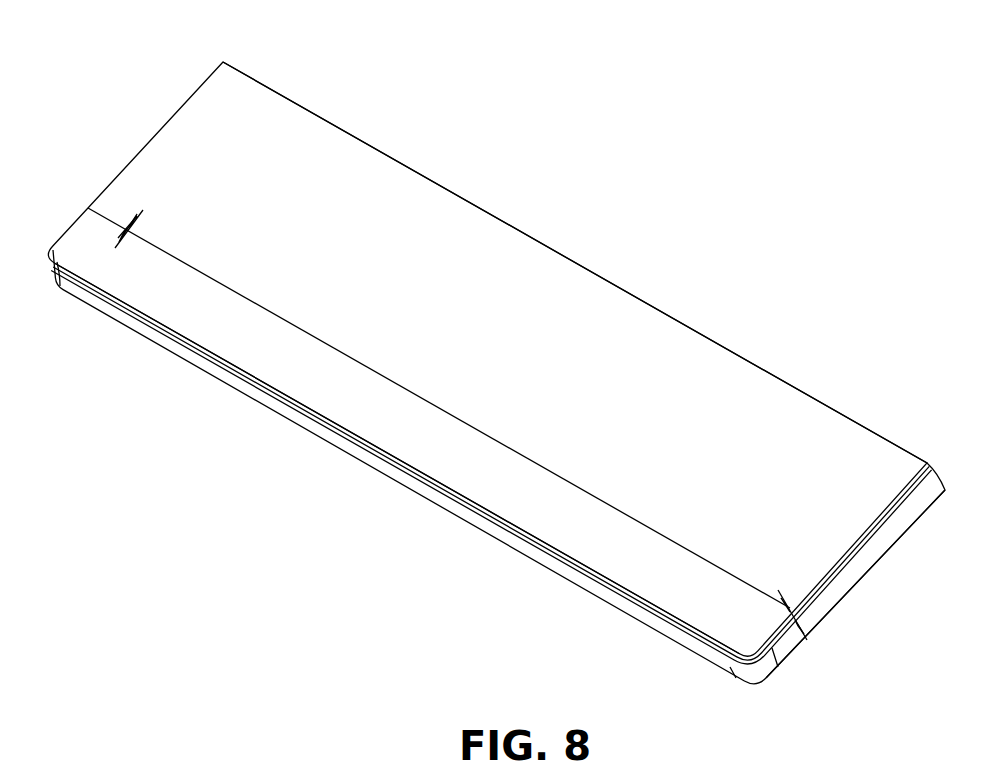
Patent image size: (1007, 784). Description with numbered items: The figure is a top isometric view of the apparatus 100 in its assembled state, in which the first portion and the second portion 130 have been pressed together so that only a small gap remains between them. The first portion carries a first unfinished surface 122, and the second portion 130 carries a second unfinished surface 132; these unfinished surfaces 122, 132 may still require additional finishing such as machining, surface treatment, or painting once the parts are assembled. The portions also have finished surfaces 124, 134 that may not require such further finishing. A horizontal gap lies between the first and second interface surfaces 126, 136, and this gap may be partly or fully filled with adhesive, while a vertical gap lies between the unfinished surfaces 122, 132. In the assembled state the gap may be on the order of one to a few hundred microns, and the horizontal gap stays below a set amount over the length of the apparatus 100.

The apparatus 100 is at (90, 73).
The first unfinished surface 122 is at (397, 459).
The finished surface 124 is at (514, 537).
The first interface surface 126 is at (205, 247).
The second portion 130 is at (758, 316).
The second unfinished surface 132 is at (575, 262).
The finished surface 134 is at (857, 573).
The second interface surface 136 is at (171, 229).